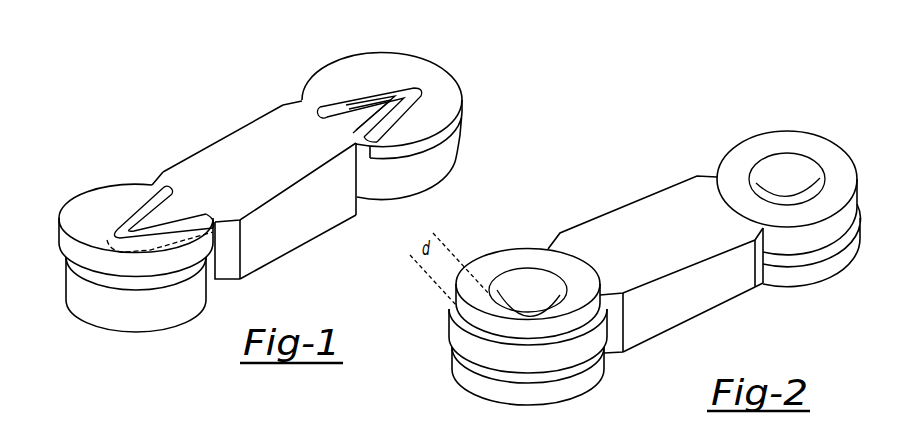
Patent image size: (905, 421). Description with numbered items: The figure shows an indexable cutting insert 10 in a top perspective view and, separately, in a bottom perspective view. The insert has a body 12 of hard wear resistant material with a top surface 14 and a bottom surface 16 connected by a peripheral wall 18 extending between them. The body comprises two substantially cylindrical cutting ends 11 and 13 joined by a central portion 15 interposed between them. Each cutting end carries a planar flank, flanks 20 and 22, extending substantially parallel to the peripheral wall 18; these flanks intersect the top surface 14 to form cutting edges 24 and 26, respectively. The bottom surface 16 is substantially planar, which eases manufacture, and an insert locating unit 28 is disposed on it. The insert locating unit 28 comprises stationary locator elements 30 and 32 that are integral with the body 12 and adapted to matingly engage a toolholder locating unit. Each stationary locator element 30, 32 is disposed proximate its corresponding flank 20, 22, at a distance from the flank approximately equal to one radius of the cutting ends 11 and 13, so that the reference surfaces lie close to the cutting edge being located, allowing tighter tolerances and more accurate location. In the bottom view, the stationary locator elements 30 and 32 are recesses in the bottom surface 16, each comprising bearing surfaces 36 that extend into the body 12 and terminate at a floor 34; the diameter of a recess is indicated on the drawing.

In FIG. 1, the indexable cutting insert 10 is at (507, 47).
In FIG. 2, the indexable cutting insert 10 is at (655, 128).
In FIG. 1, the cutting end 11 is at (66, 311).
In FIG. 1, the body 12 is at (219, 118).
In FIG. 1, the cutting end 13 is at (415, 49).
In FIG. 1, the top surface 14 is at (275, 168).
In FIG. 2, the top surface 14 is at (624, 356).
In FIG. 1, the central portion 15 is at (190, 165).
In FIG. 1, the bottom surface 16 is at (279, 260).
In FIG. 2, the bottom surface 16 is at (660, 247).
In FIG. 1, the peripheral wall 18 is at (308, 227).
In FIG. 2, the peripheral wall 18 is at (700, 305).
In FIG. 1, the flank 20 is at (145, 325).
In FIG. 2, the flank 20 is at (547, 370).
In FIG. 1, the flank 22 is at (410, 185).
In FIG. 2, the flank 22 is at (814, 252).
In FIG. 1, the cutting edge 24 is at (61, 215).
In FIG. 2, the cutting edge 24 is at (454, 372).
In FIG. 1, the cutting edge 26 is at (343, 56).
In FIG. 2, the insert locating unit 28 is at (612, 181).
In FIG. 2, the stationary locator element 30 is at (505, 272).
In FIG. 2, the stationary locator element 32 is at (783, 154).
In FIG. 2, the floor 34 is at (802, 187).
In FIG. 2, the bearing surfaces 36 is at (548, 280).